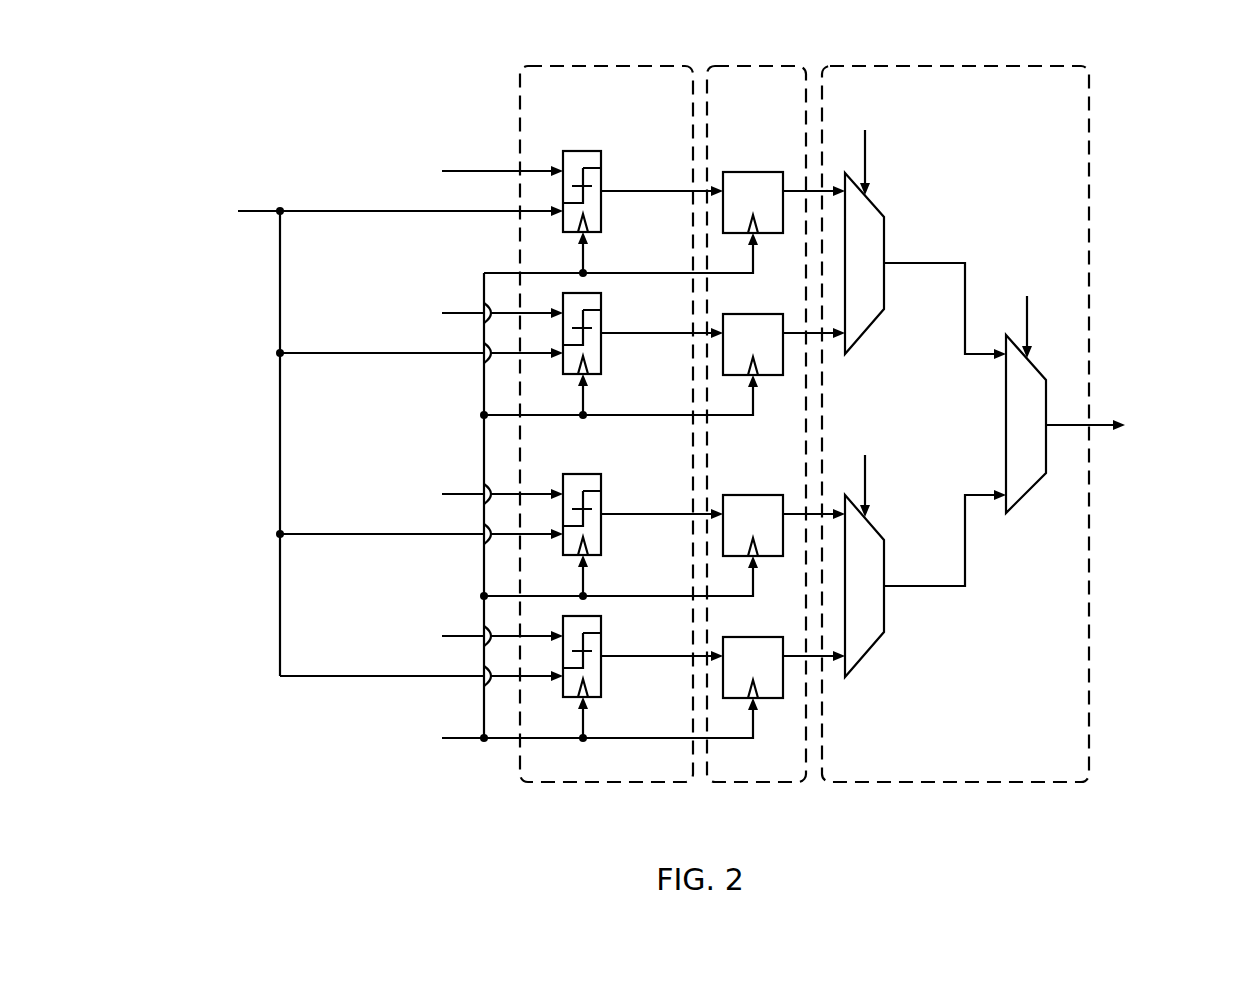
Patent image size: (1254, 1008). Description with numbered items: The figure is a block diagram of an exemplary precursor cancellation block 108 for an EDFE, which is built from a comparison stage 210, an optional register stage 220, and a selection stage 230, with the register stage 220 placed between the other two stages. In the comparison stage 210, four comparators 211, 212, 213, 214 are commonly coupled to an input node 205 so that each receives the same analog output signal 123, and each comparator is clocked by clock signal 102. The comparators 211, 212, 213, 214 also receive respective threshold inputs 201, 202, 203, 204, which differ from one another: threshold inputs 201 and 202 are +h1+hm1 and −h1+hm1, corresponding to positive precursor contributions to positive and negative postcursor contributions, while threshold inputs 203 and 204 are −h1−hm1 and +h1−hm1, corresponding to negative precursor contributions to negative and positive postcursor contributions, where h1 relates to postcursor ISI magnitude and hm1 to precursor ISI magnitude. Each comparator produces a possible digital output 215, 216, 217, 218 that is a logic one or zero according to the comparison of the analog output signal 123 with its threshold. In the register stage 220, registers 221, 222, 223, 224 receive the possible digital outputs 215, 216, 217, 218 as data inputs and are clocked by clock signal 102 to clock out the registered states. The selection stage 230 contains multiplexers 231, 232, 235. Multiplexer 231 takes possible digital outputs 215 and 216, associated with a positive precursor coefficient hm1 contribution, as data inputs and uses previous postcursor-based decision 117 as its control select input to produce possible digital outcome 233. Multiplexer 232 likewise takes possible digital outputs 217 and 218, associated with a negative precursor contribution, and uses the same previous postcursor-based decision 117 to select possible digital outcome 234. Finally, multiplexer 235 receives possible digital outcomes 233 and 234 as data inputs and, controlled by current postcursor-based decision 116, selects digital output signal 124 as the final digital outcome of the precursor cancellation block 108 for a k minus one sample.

The precursor cancellation block 108 is at (1144, 73).
The analog output signal 123 is at (238, 211).
The input node 205 is at (276, 214).
The threshold input 201 is at (445, 171).
The threshold input 202 is at (446, 313).
The threshold input 203 is at (446, 494).
The threshold input 204 is at (446, 636).
The comparator 211 is at (605, 153).
The comparator 212 is at (605, 300).
The comparator 213 is at (605, 480).
The comparator 214 is at (605, 622).
The possible digital output 215 is at (634, 195).
The possible digital output 216 is at (634, 337).
The possible digital output 217 is at (634, 518).
The possible digital output 218 is at (634, 660).
The register 221 is at (752, 162).
The register 222 is at (750, 310).
The register 223 is at (750, 492).
The register 224 is at (750, 634).
The multiplexer 231 is at (884, 215).
The multiplexer 232 is at (884, 640).
The possible digital outcome 233 is at (932, 262).
The possible digital outcome 234 is at (948, 590).
The multiplexer 235 is at (1004, 425).
The comparison stage 210 is at (583, 782).
The register stage 220 is at (778, 782).
The selection stage 230 is at (900, 782).
The previous postcursor-based decision 117 is at (872, 297).
The current postcursor-based decision 116 is at (1027, 300).
The digital output signal 124 is at (1128, 422).
The clock signal 102 is at (442, 738).